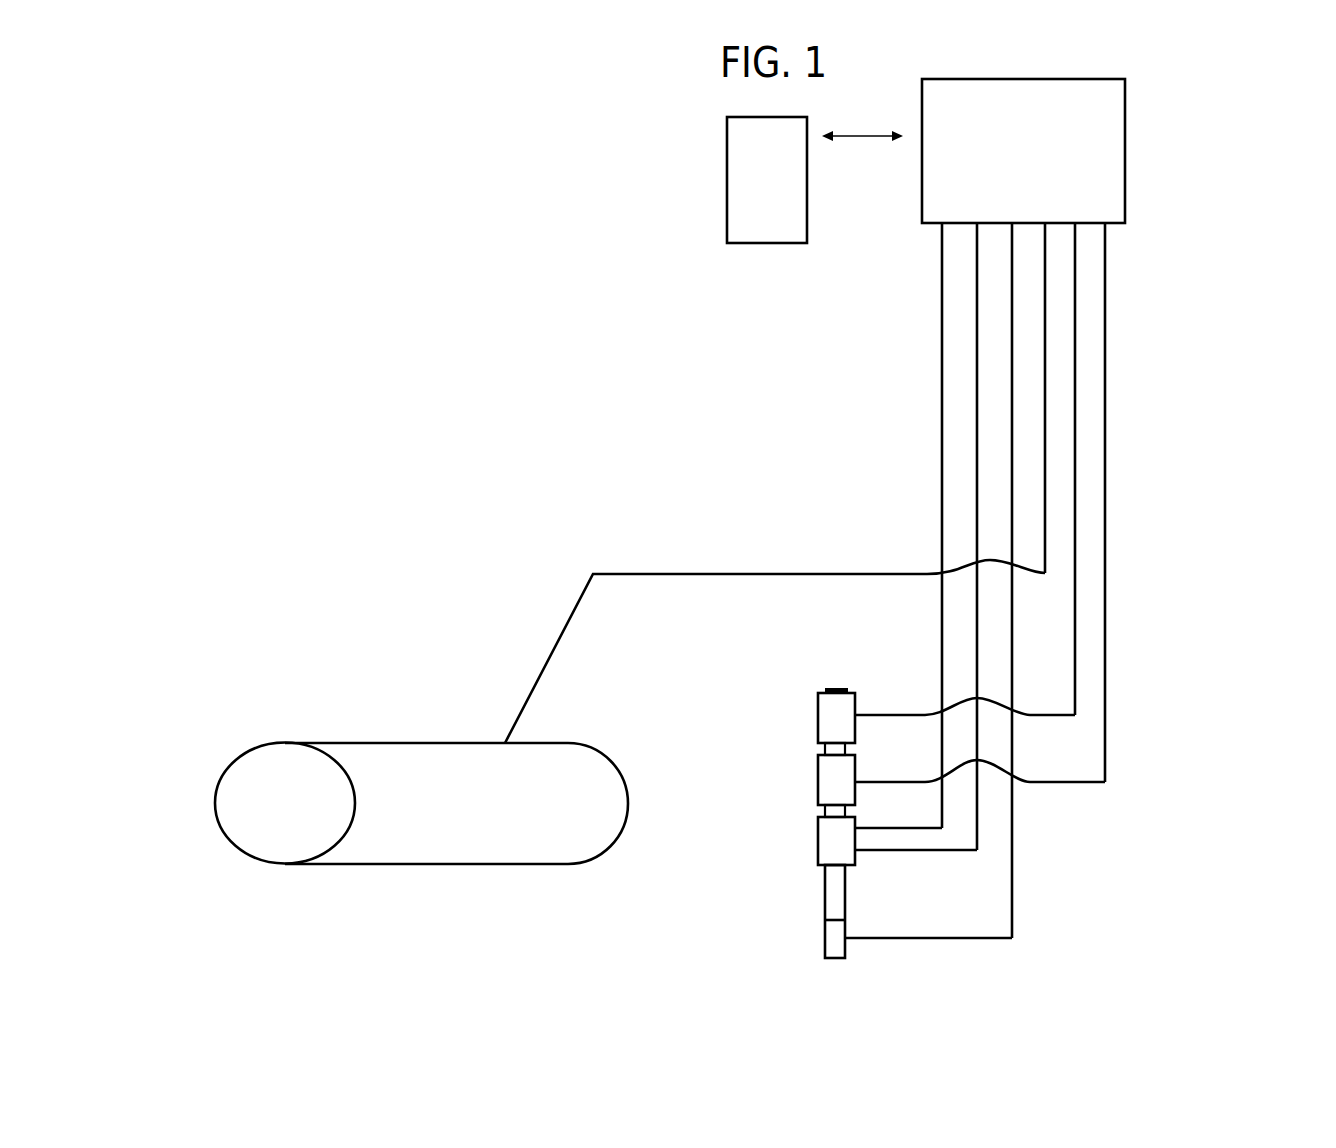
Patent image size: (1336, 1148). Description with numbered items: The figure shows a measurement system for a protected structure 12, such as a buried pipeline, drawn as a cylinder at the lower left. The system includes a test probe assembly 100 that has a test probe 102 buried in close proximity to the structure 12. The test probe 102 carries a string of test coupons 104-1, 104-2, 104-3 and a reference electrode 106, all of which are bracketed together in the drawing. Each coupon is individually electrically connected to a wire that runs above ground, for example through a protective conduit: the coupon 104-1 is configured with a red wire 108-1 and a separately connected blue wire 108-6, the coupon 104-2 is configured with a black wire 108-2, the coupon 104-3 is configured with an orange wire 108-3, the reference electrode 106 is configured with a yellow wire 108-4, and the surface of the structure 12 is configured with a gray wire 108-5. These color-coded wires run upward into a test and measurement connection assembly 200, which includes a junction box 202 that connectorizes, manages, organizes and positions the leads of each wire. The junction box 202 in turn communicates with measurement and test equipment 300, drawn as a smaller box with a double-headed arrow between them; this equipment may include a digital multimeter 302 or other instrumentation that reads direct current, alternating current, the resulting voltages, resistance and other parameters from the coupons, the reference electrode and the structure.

The structure 12 is at (400, 743).
The test probe assembly 100 is at (912, 590).
The test probe 102 is at (752, 814).
The coupon 104-1 is at (835, 838).
The coupon 104-2 is at (835, 777).
The coupon 104-3 is at (835, 717).
The reference electrode 106 is at (798, 911).
The red wire 108-1 is at (978, 415).
The black wire 108-2 is at (1105, 247).
The orange wire 108-3 is at (1075, 290).
The yellow wire 108-4 is at (1013, 373).
The gray wire 108-5 is at (1045, 333).
The blue wire 108-6 is at (942, 457).
The test and measurement connection assembly 200 is at (1113, 151).
The junction box 202 is at (1125, 177).
The measurement and test equipment 300 is at (745, 180).
The digital multimeter 302 is at (807, 210).